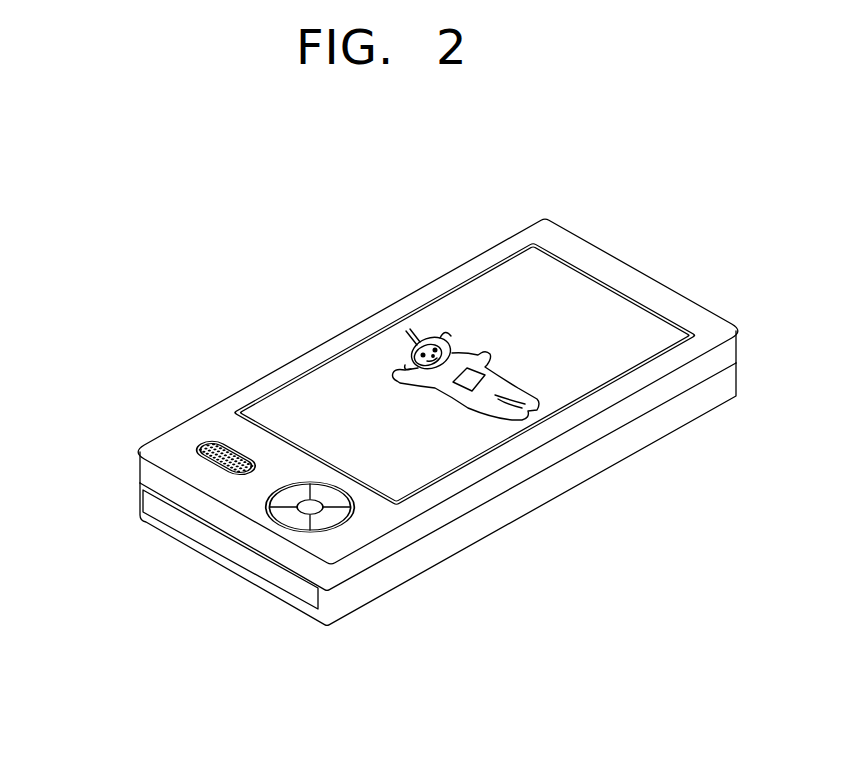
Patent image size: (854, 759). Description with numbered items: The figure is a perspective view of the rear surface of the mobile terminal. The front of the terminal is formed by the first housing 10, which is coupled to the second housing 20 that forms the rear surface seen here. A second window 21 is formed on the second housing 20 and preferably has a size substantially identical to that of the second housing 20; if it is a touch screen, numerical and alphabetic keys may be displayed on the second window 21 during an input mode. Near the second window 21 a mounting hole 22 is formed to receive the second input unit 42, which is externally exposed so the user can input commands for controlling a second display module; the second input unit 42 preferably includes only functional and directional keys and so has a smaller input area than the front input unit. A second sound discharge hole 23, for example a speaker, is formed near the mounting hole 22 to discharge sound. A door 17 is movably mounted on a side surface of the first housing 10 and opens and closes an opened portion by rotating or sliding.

The first housing 10 is at (443, 436).
The door 17 is at (252, 558).
The second housing 20 is at (617, 415).
The second window 21 is at (475, 305).
The mounting hole 22 is at (372, 561).
The second sound discharge hole 23 is at (210, 435).
The second input unit 42 is at (319, 519).